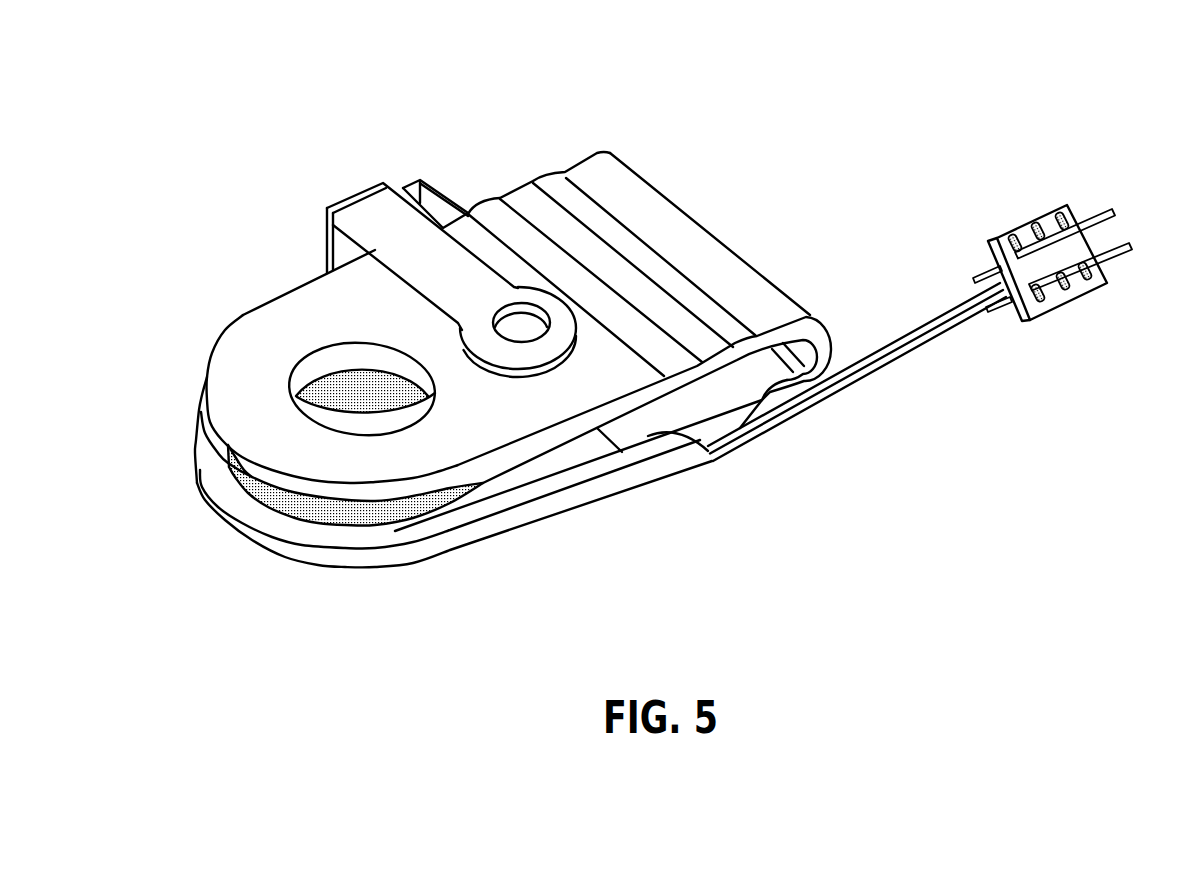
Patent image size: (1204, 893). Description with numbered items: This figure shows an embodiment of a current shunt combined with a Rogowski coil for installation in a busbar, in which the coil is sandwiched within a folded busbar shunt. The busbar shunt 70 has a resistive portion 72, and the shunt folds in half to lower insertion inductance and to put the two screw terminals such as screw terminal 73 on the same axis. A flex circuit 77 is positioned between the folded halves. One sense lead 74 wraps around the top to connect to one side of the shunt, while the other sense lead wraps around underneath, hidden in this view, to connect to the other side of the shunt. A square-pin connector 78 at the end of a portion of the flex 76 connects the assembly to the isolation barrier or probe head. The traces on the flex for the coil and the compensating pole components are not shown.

The busbar shunt 70 is at (730, 247).
The resistive portion 72 is at (515, 198).
The screw terminal 73 is at (313, 360).
The sense lead 74 is at (362, 193).
The flex portion 76 is at (860, 371).
The flex circuit 77 is at (658, 425).
The square-pin connector 78 is at (1065, 203).